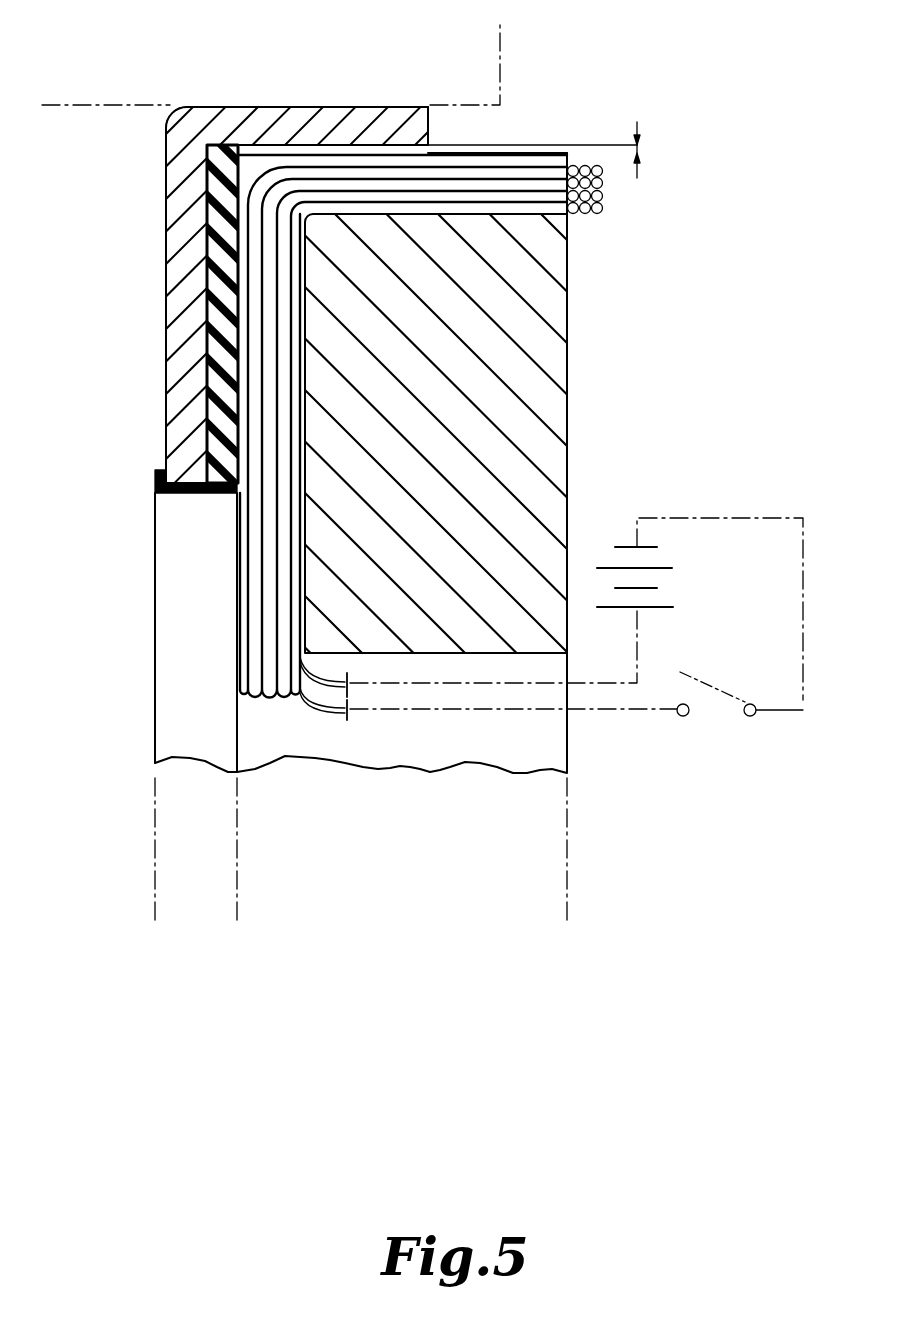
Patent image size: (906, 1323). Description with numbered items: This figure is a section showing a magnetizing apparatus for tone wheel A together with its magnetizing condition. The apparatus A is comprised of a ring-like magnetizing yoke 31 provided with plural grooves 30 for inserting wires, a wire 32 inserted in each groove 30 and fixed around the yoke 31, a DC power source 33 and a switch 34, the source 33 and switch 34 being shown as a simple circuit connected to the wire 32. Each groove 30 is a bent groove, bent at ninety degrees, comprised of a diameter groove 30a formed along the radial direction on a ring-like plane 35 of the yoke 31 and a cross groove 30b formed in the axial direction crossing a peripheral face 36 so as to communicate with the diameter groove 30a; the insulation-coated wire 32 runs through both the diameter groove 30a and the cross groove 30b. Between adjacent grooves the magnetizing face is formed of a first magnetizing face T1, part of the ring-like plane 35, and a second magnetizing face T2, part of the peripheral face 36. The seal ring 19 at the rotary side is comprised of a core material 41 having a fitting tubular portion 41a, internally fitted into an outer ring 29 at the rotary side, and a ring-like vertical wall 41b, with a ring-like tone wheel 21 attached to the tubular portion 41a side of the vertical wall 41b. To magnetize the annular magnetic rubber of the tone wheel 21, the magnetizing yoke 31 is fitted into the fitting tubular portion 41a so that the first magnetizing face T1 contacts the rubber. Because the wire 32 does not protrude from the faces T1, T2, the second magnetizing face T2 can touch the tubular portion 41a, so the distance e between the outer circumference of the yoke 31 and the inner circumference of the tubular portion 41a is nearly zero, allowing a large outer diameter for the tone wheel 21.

The seal ring 19 is at (165, 273).
The tone wheel 21 is at (205, 238).
The outer ring 29 is at (95, 103).
The groove 30 is at (334, 356).
The diameter groove 30a is at (336, 356).
The cross groove 30b is at (420, 356).
The magnetizing yoke 31 is at (548, 298).
The wire 32 is at (334, 356).
The DC power source 33 is at (618, 546).
The switch 34 is at (717, 707).
The ring-like plane 35 is at (229, 192).
The peripheral face 36 is at (460, 147).
The core material 41 is at (361, 250).
The fitting tubular portion 41a is at (270, 120).
The vertical wall 41b is at (177, 438).
The first magnetizing face T1 is at (288, 300).
The second magnetizing face T2 is at (524, 83).
The magnetizing apparatus for tone wheel A is at (551, 551).
The distance e is at (653, 150).